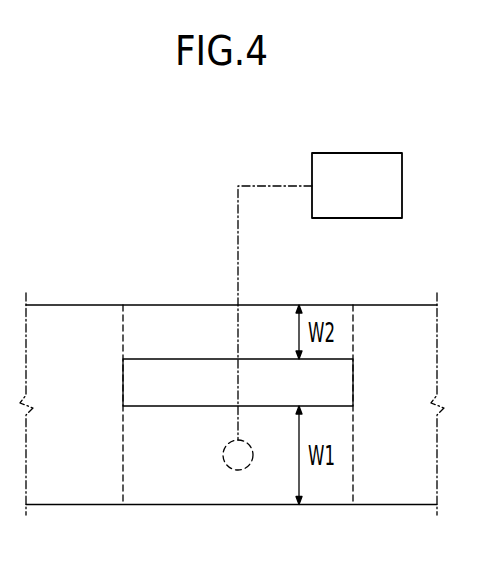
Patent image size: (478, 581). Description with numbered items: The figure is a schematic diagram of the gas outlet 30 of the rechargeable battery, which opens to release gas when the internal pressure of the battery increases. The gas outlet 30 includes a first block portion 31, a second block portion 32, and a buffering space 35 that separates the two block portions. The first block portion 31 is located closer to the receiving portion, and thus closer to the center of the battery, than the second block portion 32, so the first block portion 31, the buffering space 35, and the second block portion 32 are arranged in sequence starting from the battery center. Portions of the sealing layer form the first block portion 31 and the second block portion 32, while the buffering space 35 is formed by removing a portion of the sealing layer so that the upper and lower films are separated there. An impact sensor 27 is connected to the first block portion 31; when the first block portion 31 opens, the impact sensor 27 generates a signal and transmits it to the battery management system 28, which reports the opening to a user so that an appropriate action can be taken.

The impact sensor 27 is at (238, 470).
The battery management system 28 is at (387, 153).
The gas outlet 30 is at (353, 325).
The first block portion 31 is at (172, 487).
The second block portion 32 is at (195, 318).
The buffering space 35 is at (143, 370).